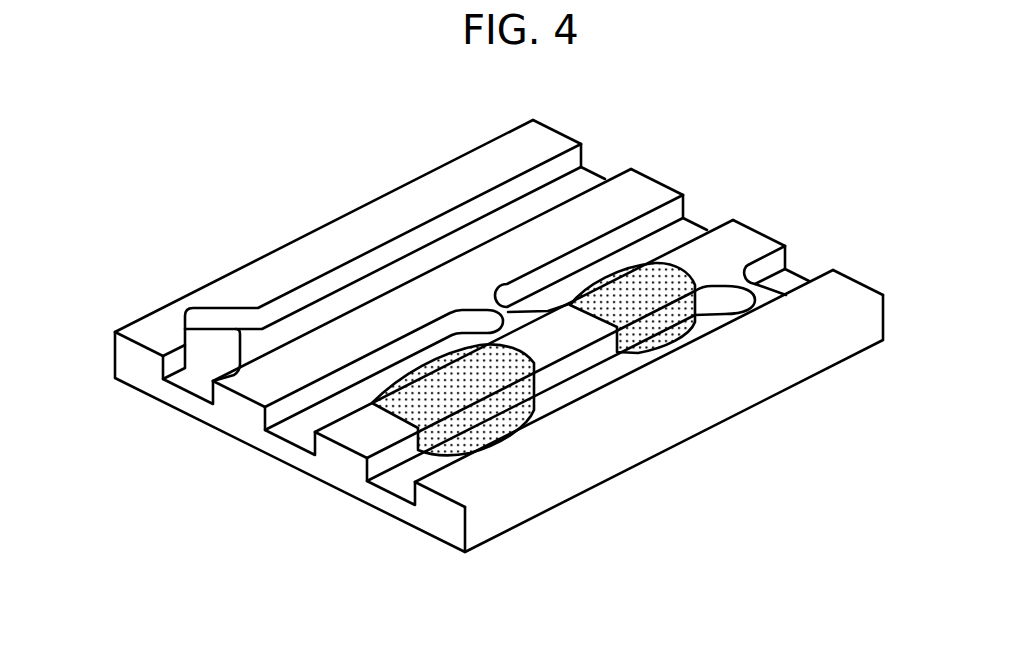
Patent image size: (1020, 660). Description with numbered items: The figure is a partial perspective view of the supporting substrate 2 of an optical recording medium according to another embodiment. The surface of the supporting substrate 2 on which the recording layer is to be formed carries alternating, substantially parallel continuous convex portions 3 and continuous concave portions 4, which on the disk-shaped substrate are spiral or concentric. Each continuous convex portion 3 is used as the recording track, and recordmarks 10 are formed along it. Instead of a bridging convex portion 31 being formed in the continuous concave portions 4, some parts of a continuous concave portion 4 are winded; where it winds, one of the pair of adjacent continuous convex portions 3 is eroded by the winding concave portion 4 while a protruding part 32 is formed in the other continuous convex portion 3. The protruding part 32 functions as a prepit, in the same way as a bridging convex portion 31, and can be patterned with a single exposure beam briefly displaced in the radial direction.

The supporting substrate 2 is at (682, 423).
The continuous convex portion 3 is at (544, 142).
The continuous concave portion 4 is at (212, 386).
The recordmark 10 is at (433, 387).
The bridging convex portion 31 is at (490, 297).
The protruding part 32 is at (250, 350).